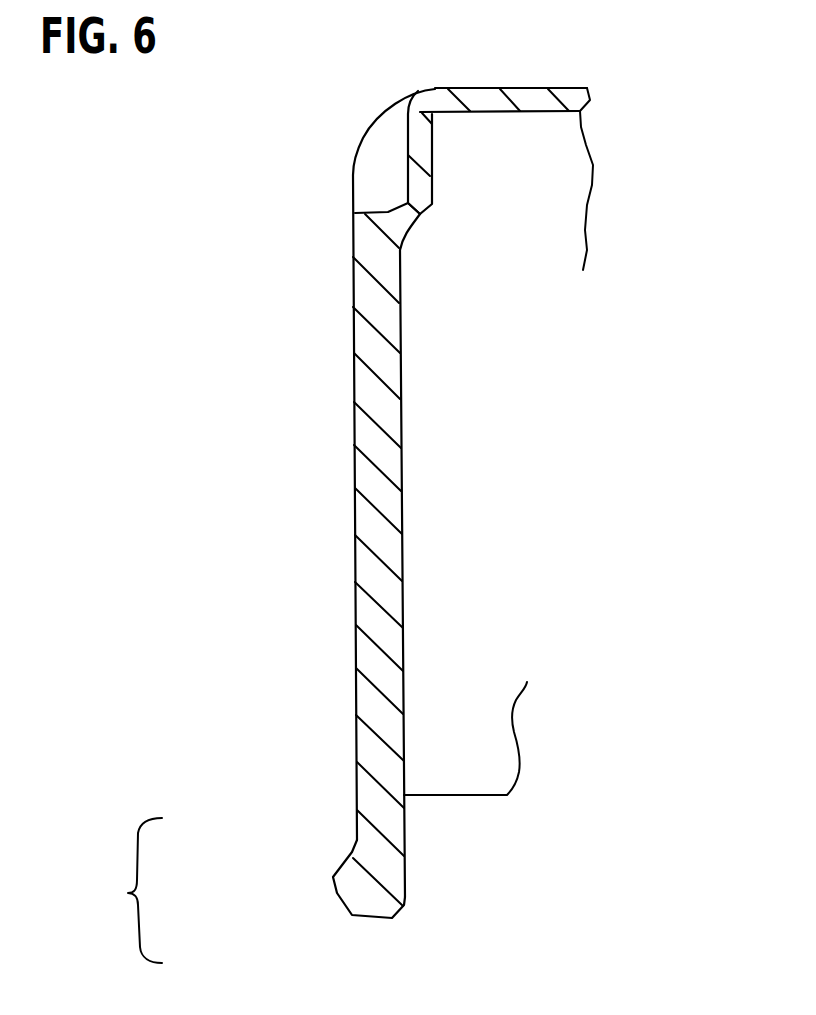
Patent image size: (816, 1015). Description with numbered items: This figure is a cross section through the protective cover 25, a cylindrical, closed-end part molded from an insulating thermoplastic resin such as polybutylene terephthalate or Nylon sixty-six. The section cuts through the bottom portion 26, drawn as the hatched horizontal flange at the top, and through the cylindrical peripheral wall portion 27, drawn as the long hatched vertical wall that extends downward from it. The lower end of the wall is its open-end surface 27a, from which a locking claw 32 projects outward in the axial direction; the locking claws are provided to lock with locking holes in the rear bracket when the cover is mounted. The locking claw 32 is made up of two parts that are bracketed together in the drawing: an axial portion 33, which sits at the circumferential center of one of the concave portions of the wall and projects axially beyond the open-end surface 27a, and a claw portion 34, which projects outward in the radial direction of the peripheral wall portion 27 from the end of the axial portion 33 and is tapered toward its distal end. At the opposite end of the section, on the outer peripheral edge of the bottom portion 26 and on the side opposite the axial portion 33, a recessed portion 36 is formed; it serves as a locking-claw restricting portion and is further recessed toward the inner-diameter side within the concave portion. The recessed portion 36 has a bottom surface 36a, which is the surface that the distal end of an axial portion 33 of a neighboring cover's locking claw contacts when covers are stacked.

The protective cover 25 is at (532, 445).
The bottom portion 26 is at (540, 87).
The peripheral wall portion 27 is at (353, 520).
The open-end surface 27a is at (478, 800).
The locking claw 32 is at (128, 893).
The axial portion 33 is at (390, 830).
The claw portion 34 is at (348, 884).
The recessed portion 36 is at (398, 170).
The bottom surface 36a is at (382, 210).